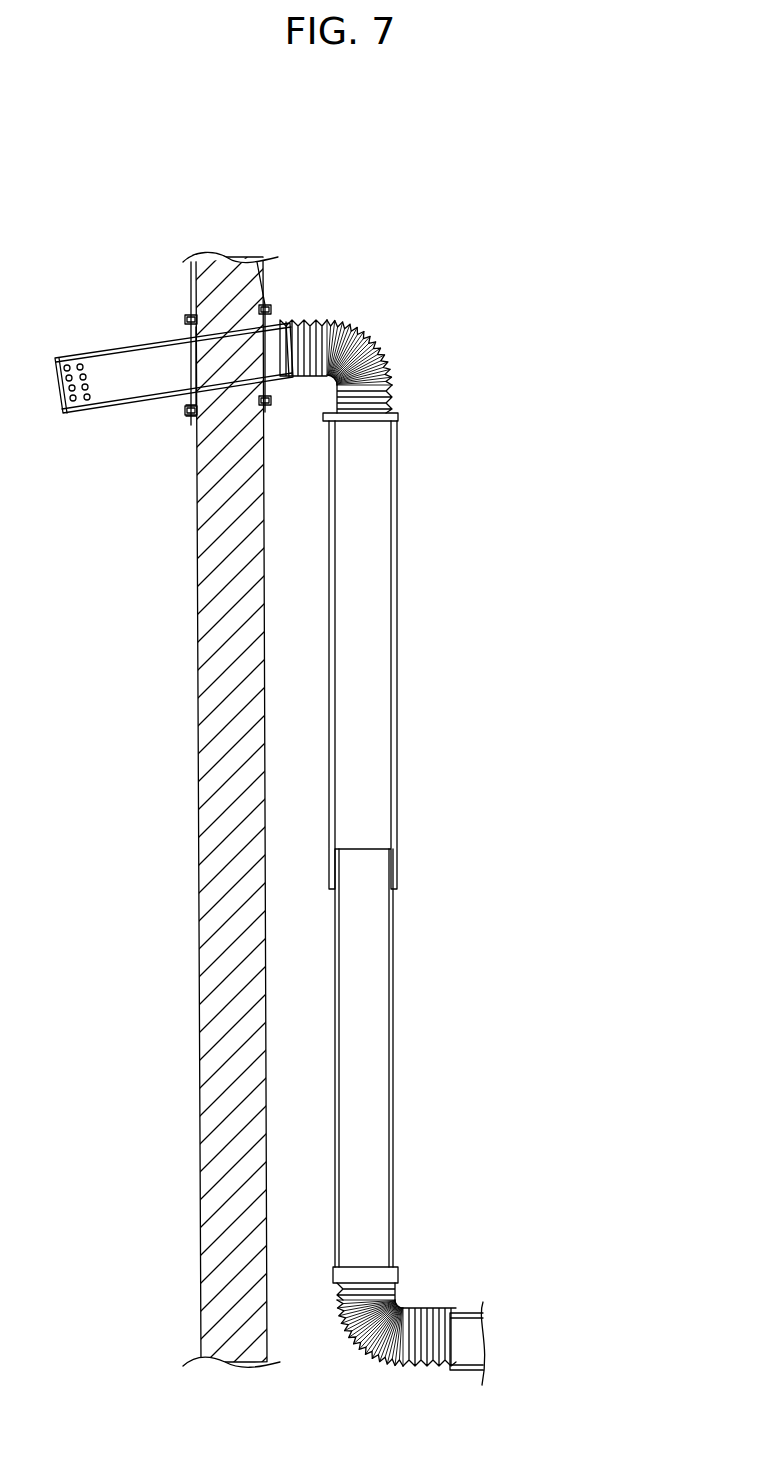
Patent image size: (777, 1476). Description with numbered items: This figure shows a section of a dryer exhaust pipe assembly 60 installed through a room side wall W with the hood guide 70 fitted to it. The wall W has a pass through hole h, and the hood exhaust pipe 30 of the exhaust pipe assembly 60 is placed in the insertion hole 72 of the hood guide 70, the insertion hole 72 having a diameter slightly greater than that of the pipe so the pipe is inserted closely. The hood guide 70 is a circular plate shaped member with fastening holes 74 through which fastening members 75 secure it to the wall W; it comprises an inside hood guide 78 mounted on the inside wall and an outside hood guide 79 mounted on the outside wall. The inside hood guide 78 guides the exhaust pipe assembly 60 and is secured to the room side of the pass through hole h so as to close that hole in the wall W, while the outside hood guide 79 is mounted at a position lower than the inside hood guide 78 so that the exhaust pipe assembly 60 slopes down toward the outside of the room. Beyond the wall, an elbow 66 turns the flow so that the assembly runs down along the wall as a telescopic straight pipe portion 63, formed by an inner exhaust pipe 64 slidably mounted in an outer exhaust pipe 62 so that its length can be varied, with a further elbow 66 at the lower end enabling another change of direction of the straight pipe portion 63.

The hood guide 70 is at (166, 327).
The outside hood guide 79 is at (191, 262).
The inside hood guide 78 is at (257, 262).
The insertion hole 72 is at (186, 336).
The fastening members 75 is at (192, 413).
The fastening holes 74 is at (194, 443).
The pass through hole h is at (194, 455).
The hood exhaust pipe 30 is at (279, 335).
The elbow 66 is at (372, 354).
The straight pipe portion 63 is at (434, 848).
The inner exhaust pipe 64 is at (362, 686).
The outer exhaust pipe 62 is at (439, 1066).
The exhaust pipe assembly 60 is at (485, 800).
The room side wall W is at (238, 950).